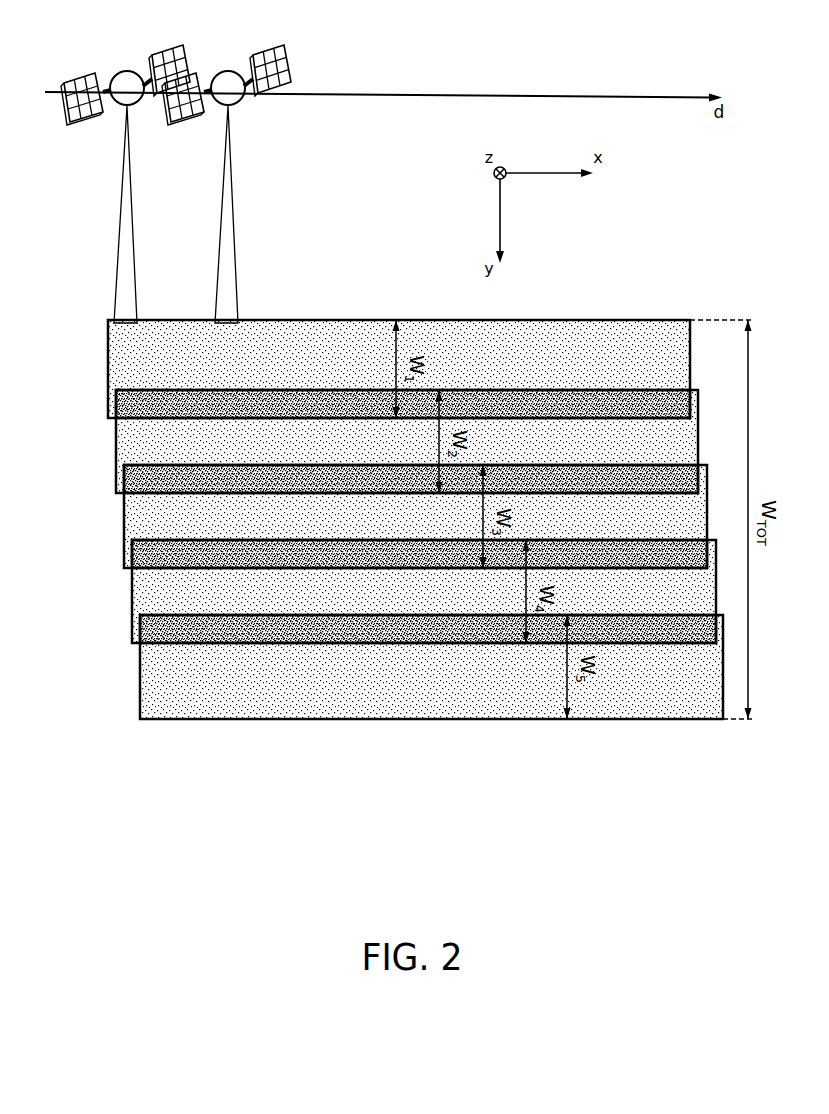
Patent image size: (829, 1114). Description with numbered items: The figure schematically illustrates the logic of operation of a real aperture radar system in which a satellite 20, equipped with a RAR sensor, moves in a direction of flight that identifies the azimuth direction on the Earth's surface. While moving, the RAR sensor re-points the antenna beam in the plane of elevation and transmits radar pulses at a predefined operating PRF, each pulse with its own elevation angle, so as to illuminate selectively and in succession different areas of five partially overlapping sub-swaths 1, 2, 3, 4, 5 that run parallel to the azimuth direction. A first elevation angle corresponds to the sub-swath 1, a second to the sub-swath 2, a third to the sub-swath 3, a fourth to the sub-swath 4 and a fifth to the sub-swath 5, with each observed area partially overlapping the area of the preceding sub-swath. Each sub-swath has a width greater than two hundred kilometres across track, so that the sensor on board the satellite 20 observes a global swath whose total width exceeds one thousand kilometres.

The sub-swath 1 is at (399, 369).
The sub-swath 2 is at (407, 441).
The sub-swath 3 is at (415, 516).
The sub-swath 4 is at (424, 591).
The sub-swath 5 is at (431, 667).
The satellite 20 is at (128, 80).